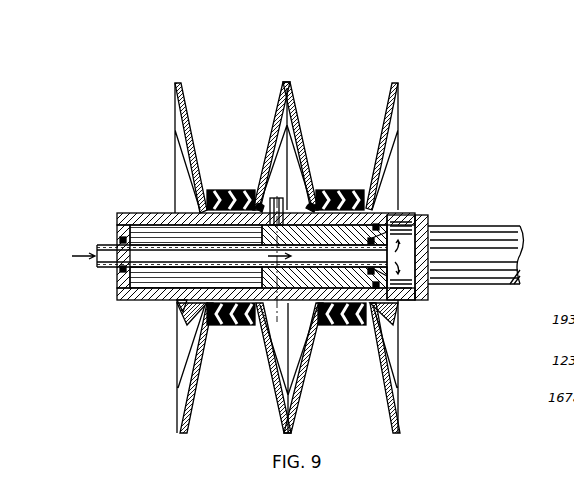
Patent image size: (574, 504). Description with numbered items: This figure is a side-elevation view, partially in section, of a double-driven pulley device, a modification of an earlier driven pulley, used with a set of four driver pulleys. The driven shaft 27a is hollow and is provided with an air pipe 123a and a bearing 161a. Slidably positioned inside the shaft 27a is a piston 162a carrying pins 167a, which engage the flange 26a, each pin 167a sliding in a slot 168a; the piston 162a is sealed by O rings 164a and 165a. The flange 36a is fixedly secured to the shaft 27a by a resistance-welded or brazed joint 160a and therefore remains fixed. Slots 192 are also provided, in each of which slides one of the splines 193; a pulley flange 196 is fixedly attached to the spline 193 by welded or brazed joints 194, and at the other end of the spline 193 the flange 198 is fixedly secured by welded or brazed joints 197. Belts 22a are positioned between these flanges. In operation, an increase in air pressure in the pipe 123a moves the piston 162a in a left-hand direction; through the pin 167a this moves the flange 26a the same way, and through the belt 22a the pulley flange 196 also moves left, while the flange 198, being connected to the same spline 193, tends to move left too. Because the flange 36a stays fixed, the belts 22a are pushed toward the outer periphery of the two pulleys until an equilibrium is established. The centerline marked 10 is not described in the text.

The pin / reference axis 10 is at (275, 198).
The belts 22a is at (203, 193).
The flange 26a is at (282, 108).
The driven shaft 27a is at (430, 220).
The flange 36a is at (288, 113).
The air pipe 123a is at (112, 262).
The resistance-welded or brazed joint 160a is at (304, 207).
The bearing 161a is at (120, 240).
The piston 162a is at (382, 302).
The sealing O ring 164a is at (430, 216).
The sealing O ring 165a is at (397, 214).
The pin 167a is at (261, 205).
The slot 168a is at (200, 222).
The slot 192 is at (125, 300).
The spline 193 is at (180, 304).
The welded or brazed joint 194 is at (178, 308).
The pulley flange 196 is at (178, 108).
The welded or brazed joint 197 is at (393, 302).
The flange 198 is at (393, 108).